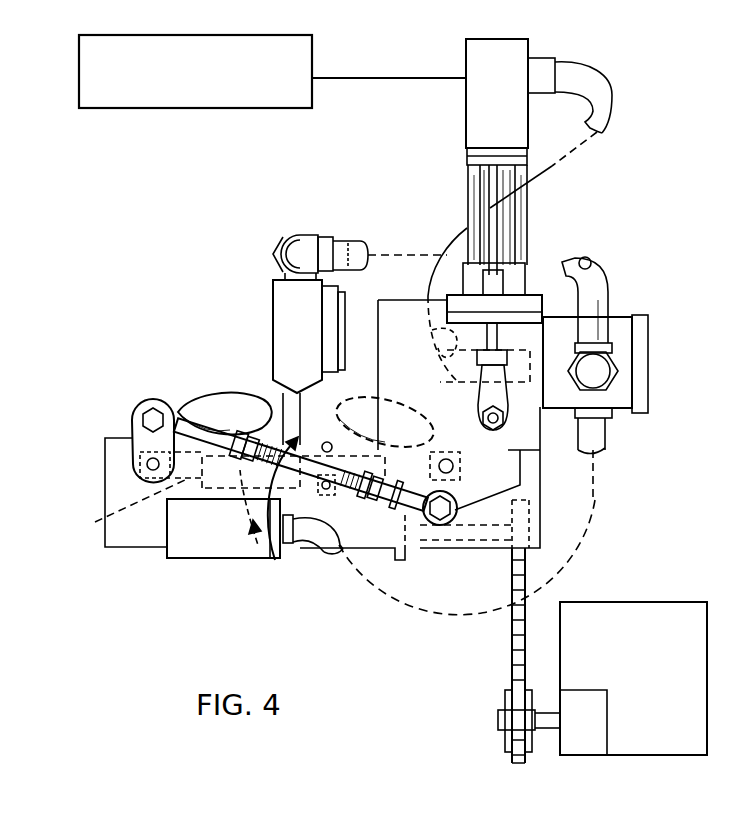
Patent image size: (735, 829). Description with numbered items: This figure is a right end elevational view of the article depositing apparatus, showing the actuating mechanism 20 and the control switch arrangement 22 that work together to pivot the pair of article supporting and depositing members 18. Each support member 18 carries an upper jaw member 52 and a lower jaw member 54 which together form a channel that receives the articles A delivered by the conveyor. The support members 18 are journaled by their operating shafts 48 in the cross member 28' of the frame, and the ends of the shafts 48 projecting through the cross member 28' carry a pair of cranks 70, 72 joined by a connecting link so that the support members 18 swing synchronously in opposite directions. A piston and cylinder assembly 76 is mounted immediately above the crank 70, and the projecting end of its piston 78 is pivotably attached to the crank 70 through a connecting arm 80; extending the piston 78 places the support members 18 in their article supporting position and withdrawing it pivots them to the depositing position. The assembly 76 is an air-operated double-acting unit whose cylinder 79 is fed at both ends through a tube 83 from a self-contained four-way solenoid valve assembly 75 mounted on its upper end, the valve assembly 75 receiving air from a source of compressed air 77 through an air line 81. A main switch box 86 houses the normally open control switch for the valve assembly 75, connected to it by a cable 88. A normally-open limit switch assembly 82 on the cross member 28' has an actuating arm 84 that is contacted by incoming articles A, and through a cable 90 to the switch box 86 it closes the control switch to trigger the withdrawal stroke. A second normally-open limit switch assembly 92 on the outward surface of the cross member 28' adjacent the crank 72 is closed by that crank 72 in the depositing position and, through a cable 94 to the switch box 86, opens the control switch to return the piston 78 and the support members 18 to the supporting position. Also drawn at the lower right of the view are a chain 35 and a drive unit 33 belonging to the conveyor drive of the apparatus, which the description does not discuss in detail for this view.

The source of compressed air 77 is at (160, 108).
The air line 81 is at (378, 78).
The valve assembly 75 is at (510, 109).
The cable 88 is at (610, 84).
The cylinder 79 is at (478, 208).
The tube 83 is at (490, 207).
The piston and cylinder assembly 76 is at (500, 224).
The cable 90 is at (342, 250).
The limit switch assembly 82 is at (282, 345).
The piston 78 is at (548, 328).
The main switch box 86 is at (622, 388).
The cable 94 is at (298, 530).
The connecting arm 80 is at (545, 445).
The actuating mechanism 20 is at (555, 487).
The crank 70 is at (538, 530).
The chain 35 is at (510, 635).
The motor 33 is at (649, 655).
The crank 72 is at (133, 430).
The operating shafts 48 is at (147, 462).
The lower jaw member 54 is at (105, 519).
The cross member 28' is at (245, 514).
The limit switch assembly 92 is at (192, 538).
The articles A is at (258, 560).
The control switch arrangement 22 is at (280, 548).
The actuating arm 84 is at (264, 418).
The article supporting and depositing members 18 is at (240, 392).
The upper jaw member 52 is at (185, 405).